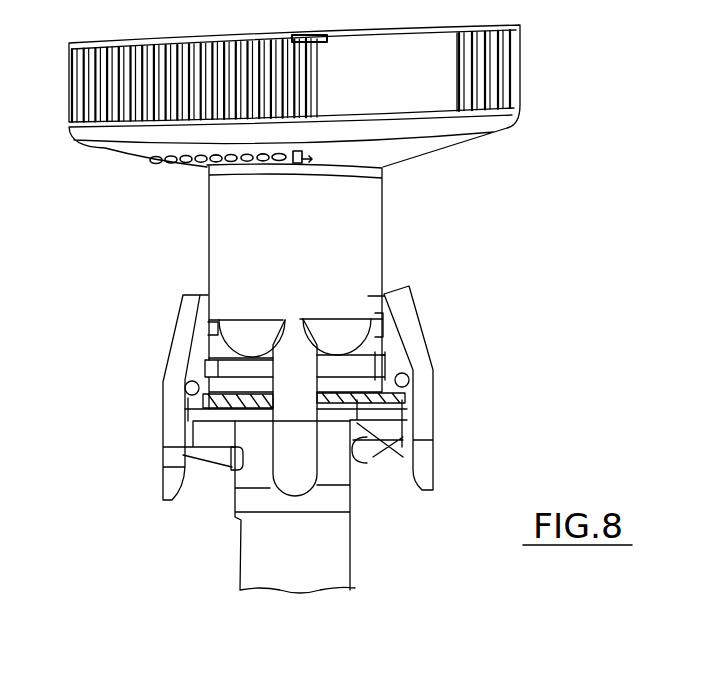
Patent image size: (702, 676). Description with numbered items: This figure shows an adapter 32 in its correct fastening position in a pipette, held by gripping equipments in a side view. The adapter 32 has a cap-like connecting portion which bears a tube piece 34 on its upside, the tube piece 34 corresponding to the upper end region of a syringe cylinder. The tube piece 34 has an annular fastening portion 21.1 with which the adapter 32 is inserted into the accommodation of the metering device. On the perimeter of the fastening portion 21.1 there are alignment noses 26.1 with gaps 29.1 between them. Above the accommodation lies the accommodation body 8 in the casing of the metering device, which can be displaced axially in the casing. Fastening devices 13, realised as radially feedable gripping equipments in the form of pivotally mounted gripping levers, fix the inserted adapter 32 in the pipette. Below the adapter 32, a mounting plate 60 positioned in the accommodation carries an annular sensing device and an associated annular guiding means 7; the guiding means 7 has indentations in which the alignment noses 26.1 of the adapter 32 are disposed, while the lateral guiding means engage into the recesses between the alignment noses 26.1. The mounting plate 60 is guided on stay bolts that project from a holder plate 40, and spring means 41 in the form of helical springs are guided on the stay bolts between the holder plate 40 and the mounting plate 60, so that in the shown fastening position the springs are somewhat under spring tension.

The annular guiding means 7 is at (392, 350).
The accommodation body 8 is at (311, 574).
The fastening devices 13 is at (175, 362).
The annular fastening portion 21.1 is at (208, 296).
The alignment noses 26.1 is at (249, 318).
The gaps 29.1 is at (300, 320).
The adapter 32 is at (388, 232).
The tube piece 34 is at (361, 222).
The holder plate 40 is at (436, 457).
The spring means 41 is at (345, 411).
The mounting plate 60 is at (398, 385).